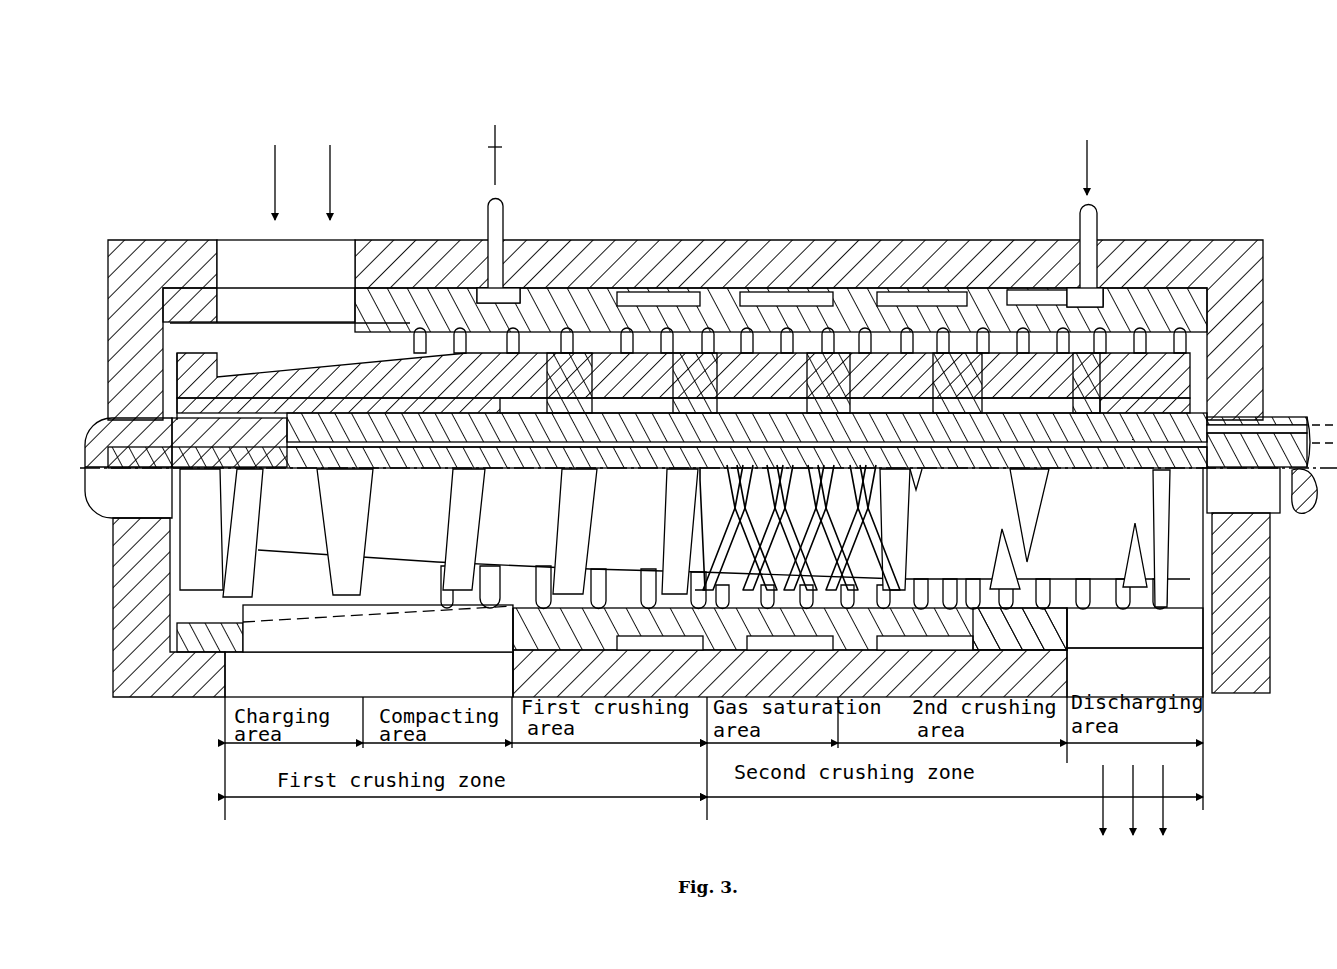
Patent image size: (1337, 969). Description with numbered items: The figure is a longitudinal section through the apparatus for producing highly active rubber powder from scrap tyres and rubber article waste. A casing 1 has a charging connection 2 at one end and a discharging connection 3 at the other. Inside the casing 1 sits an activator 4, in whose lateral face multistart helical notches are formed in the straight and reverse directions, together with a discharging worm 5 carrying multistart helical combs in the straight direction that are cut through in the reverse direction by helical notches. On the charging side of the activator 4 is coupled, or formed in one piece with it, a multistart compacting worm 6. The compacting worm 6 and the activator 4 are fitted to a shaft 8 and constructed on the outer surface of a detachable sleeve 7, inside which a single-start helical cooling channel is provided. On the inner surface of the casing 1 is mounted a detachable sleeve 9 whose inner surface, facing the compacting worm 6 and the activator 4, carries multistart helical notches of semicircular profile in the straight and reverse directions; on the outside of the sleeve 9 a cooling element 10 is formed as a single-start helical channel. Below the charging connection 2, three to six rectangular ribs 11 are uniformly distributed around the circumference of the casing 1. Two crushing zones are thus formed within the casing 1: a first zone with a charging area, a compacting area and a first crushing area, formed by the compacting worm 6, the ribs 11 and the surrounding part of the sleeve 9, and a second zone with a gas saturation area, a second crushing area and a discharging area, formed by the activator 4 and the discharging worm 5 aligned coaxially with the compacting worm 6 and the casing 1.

The casing 1 is at (708, 276).
The charging connection 2 is at (286, 178).
The discharging connection 3 is at (1135, 434).
The activator 4 is at (797, 312).
The discharging worm 5 is at (1020, 342).
The compacting worm 6 is at (683, 320).
The stator housing 7 is at (790, 365).
The shaft 8 is at (747, 240).
The detachable sleeve 9 is at (781, 183).
The cooling element 10 is at (800, 321).
The rectangular ribs 11 is at (689, 365).